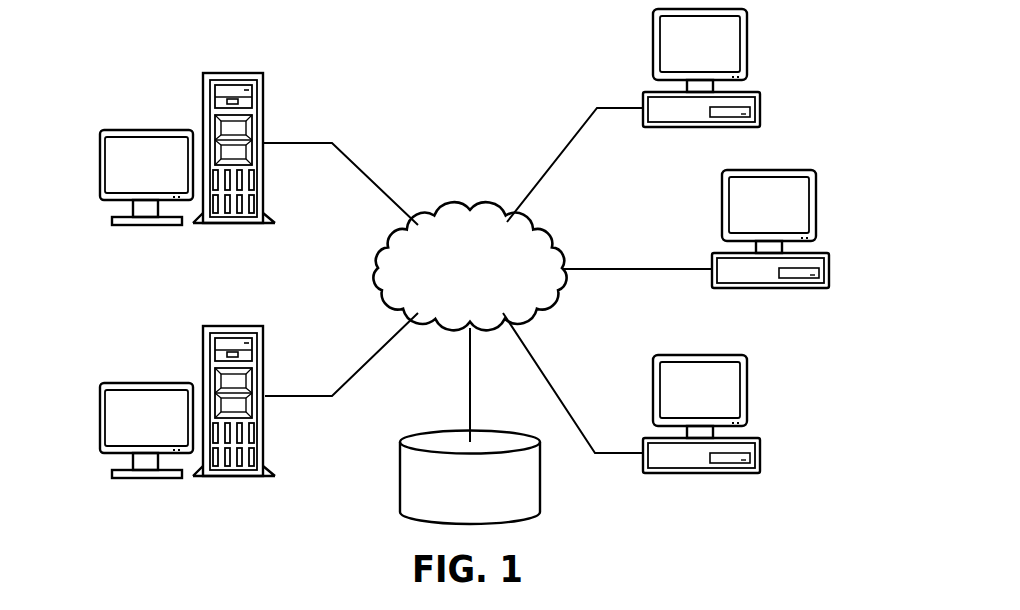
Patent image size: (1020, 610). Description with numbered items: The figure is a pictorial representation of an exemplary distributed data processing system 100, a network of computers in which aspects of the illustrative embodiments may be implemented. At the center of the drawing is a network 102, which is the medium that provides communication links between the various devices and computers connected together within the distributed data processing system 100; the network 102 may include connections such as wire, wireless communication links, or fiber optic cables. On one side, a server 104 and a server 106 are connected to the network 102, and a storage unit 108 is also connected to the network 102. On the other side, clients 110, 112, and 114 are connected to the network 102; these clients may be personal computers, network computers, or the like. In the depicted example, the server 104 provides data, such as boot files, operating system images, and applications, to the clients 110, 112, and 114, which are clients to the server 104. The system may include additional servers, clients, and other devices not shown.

The distributed data processing system 100 is at (336, 64).
The network 102 is at (441, 218).
The server 104 is at (100, 165).
The server 106 is at (100, 418).
The storage unit 108 is at (400, 476).
The client 110 is at (760, 100).
The client 112 is at (828, 278).
The client 114 is at (760, 462).